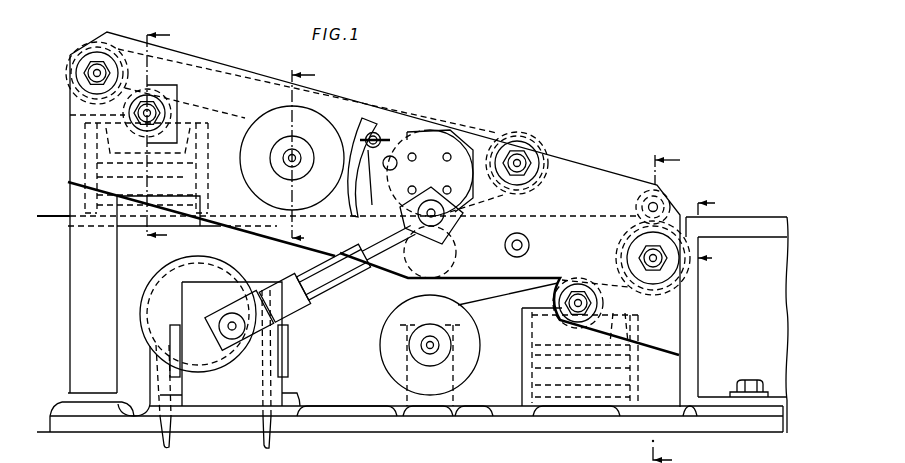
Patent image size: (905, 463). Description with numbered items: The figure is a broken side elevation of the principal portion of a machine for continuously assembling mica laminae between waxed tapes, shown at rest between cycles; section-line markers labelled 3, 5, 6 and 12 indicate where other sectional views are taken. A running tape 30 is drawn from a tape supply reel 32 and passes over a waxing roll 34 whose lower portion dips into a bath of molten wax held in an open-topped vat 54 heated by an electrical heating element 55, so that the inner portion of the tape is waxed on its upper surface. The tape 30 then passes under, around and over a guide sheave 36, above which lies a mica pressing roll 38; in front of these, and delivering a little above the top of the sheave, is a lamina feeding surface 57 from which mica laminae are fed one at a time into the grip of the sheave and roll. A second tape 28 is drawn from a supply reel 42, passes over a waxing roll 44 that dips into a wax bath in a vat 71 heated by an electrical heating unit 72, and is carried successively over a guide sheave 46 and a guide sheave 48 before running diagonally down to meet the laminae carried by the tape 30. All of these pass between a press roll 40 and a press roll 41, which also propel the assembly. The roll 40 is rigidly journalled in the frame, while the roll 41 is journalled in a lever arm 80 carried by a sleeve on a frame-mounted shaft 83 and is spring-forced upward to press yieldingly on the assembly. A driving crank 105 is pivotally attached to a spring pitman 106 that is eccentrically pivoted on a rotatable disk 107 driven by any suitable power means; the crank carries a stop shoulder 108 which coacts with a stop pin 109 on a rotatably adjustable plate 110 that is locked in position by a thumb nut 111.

The tape 28 is at (220, 108).
The tape 30 is at (566, 221).
The tape supply reel 32 is at (385, 345).
The waxing roll 34 is at (556, 303).
The guide sheave 36 is at (698, 270).
The mica pressing roll 38 is at (643, 203).
The press roll 40 is at (468, 119).
The press roll 41 is at (443, 250).
The supply reel 42 is at (245, 194).
The waxing roll 44 is at (70, 115).
The guide sheave 46 is at (76, 99).
The guide sheave 48 is at (538, 150).
The vat 54 is at (523, 346).
The electrical heating element 55 is at (634, 378).
The lamina feeding surface 57 is at (742, 216).
The vat 71 is at (197, 152).
The electrical heating unit 72 is at (196, 180).
The lever arm 80 is at (482, 302).
The shaft 83 is at (516, 247).
The driving crank 105 is at (455, 210).
The spring pitman 106 is at (335, 280).
The rotatable disk 107 is at (206, 312).
The stop shoulder 108 is at (411, 130).
The stop pin 109 is at (391, 157).
The rotatably adjustable plate 110 is at (368, 191).
The thumb nut 111 is at (374, 134).
The section line 3- 3 is at (667, 162).
The section line 5- 5 is at (707, 233).
The section line 6- 6 is at (158, 136).
The section line 12- 12 is at (310, 152).